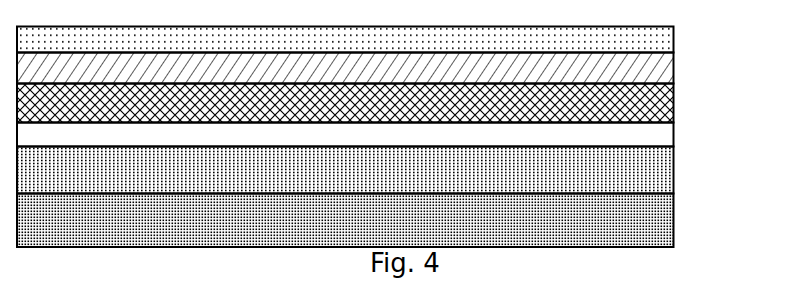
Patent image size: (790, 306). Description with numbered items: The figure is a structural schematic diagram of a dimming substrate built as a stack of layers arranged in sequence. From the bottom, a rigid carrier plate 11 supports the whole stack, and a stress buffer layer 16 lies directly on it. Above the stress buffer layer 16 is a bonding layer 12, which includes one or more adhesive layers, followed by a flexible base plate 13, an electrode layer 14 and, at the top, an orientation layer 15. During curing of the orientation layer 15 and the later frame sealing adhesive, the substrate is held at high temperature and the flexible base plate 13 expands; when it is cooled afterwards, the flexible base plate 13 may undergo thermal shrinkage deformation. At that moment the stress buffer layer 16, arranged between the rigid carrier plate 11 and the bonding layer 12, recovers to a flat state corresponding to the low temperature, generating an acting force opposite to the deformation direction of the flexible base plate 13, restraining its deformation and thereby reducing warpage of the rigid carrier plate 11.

The rigid carrier plate 11 is at (635, 225).
The bonding layer 12 is at (635, 138).
The flexible base plate 13 is at (632, 110).
The electrode layer 14 is at (627, 77).
The orientation layer 15 is at (632, 45).
The stress buffer layer 16 is at (630, 178).